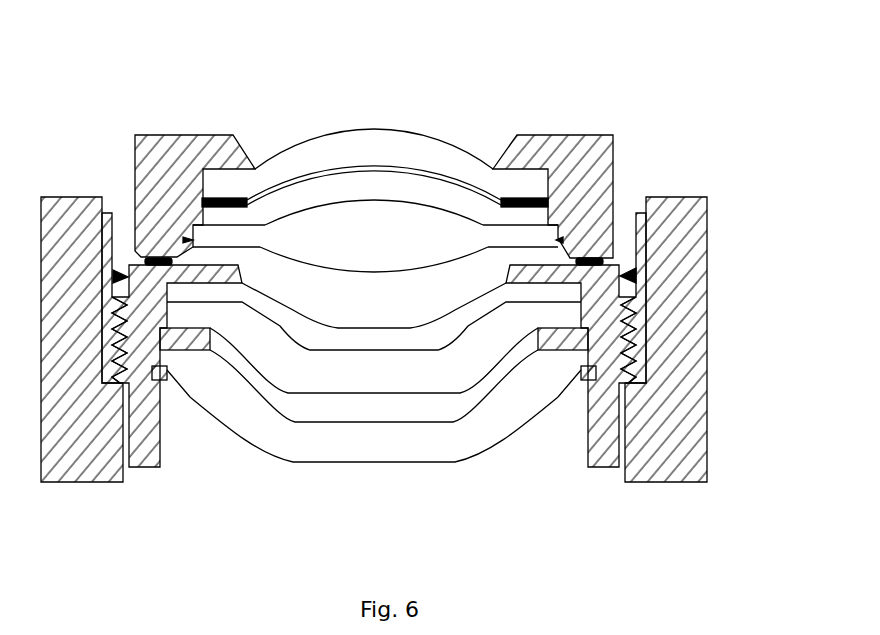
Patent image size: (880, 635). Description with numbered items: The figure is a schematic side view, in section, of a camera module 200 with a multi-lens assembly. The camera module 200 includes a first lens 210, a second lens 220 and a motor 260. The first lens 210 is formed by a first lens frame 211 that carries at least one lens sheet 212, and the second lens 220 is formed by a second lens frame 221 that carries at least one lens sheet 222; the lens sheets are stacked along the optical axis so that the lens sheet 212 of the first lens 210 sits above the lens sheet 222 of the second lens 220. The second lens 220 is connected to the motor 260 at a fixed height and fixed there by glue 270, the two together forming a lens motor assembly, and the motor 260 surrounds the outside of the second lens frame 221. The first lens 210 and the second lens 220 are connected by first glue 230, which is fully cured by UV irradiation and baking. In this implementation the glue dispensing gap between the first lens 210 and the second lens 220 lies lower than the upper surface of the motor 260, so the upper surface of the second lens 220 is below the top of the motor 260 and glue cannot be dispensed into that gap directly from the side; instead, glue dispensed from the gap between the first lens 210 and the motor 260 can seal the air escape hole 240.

The camera module 200 is at (487, 109).
The first lens 210 is at (615, 141).
The first lens frame 211 is at (584, 167).
The lens sheet 212 is at (307, 157).
The second lens 220 is at (166, 442).
The second lens frame 221 is at (605, 443).
The lens sheet 222 is at (452, 431).
The first glue 230 is at (155, 257).
The air escape hole 240 is at (592, 260).
The motor 260 is at (685, 345).
The glue 270 is at (637, 277).